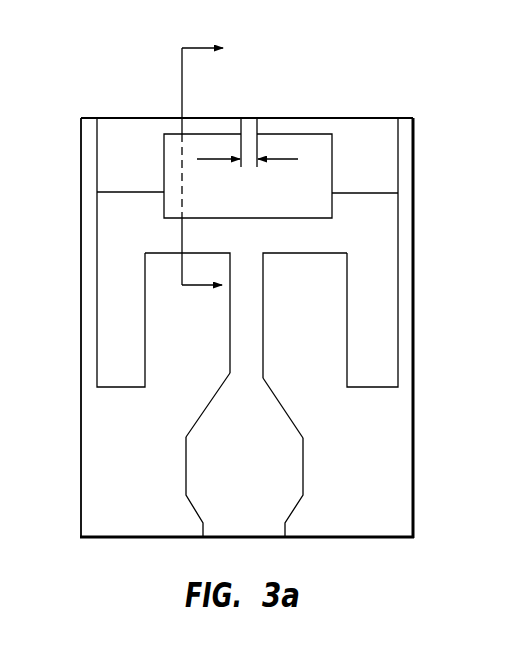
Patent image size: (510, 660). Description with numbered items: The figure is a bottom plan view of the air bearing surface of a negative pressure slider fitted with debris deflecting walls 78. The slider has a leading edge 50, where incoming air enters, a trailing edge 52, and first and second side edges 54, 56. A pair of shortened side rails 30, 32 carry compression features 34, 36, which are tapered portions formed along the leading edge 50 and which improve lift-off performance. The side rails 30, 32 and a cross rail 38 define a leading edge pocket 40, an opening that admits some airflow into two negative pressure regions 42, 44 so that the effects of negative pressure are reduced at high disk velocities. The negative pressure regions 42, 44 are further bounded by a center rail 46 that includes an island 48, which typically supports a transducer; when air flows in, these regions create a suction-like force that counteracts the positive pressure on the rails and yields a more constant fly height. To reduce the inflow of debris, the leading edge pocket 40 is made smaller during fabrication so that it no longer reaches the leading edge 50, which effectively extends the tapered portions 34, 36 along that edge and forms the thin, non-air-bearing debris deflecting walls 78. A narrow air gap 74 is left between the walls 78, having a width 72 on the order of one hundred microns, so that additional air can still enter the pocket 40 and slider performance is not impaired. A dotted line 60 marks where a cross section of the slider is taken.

The side rail 30 is at (103, 333).
The side rail 32 is at (390, 334).
The compression feature 34 is at (103, 163).
The compression feature 36 is at (392, 167).
The cross rail 38 is at (201, 246).
The leading edge pocket 40 is at (235, 204).
The negative pressure region 42 is at (173, 344).
The negative pressure region 44 is at (293, 346).
The center rail 46 is at (233, 351).
The island 48 is at (231, 479).
The leading edge 50 is at (350, 118).
The trailing edge 52 is at (370, 538).
The first side edge 54 is at (81, 431).
The second side edge 56 is at (413, 437).
The dotted line 60 is at (182, 46).
The width 72 is at (298, 159).
The air gap 74 is at (248, 118).
The debris deflecting wall 78 is at (205, 118).